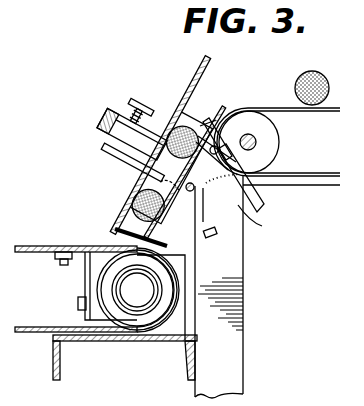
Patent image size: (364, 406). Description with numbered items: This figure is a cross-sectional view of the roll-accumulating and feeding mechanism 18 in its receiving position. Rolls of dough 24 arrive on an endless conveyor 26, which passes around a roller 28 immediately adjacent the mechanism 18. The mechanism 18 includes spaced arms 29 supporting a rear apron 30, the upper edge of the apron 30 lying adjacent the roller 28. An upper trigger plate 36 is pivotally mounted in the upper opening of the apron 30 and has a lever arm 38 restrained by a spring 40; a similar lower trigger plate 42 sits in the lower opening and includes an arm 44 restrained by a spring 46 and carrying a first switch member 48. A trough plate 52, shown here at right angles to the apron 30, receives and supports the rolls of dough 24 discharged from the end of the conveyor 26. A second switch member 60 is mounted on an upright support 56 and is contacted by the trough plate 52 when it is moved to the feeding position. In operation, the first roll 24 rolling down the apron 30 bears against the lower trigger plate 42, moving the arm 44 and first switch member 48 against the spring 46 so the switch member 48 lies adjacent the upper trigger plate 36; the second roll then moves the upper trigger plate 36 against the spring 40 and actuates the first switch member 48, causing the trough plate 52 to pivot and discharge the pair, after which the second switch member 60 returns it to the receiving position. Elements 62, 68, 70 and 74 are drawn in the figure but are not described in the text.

The roll-accumulating and feeding mechanism 18 is at (160, 96).
The rolls of dough 24 is at (320, 80).
The endless conveyor 26 is at (270, 106).
The roller 28 is at (266, 131).
The spaced arms 29 is at (128, 152).
The rear apron 30 is at (213, 124).
The upper trigger plate 36 is at (170, 170).
The lever arm 38 is at (246, 188).
The spring 40 is at (258, 210).
The lower trigger plate 42 is at (162, 224).
The arm 44 is at (221, 202).
The spring 46 is at (244, 214).
The first switch member 48 is at (222, 156).
The trough plate 52 is at (122, 228).
The upright support 56 is at (233, 322).
The second switch member 60 is at (212, 238).
The housing plate 62 is at (50, 246).
The bracket 68 is at (95, 272).
The roller 70 is at (114, 288).
The mounting tab 74 is at (40, 255).